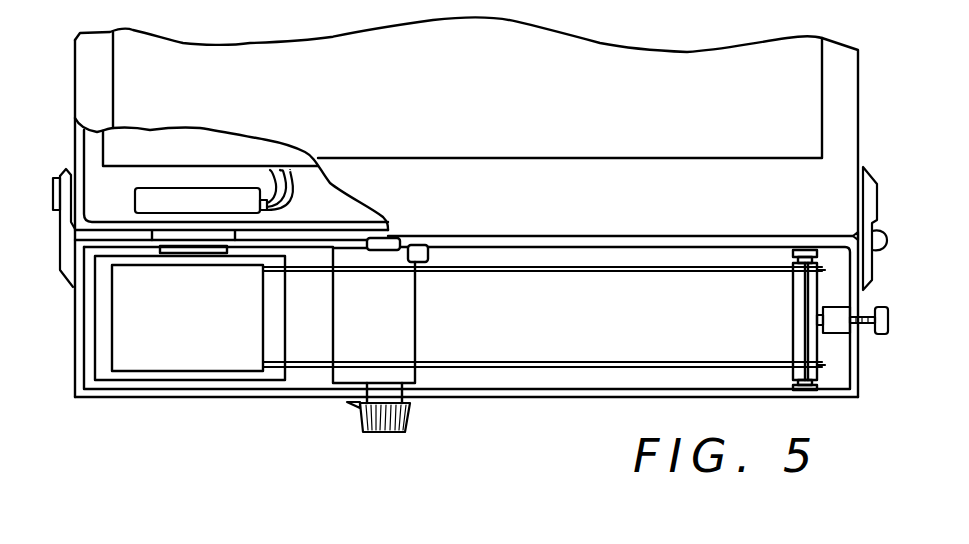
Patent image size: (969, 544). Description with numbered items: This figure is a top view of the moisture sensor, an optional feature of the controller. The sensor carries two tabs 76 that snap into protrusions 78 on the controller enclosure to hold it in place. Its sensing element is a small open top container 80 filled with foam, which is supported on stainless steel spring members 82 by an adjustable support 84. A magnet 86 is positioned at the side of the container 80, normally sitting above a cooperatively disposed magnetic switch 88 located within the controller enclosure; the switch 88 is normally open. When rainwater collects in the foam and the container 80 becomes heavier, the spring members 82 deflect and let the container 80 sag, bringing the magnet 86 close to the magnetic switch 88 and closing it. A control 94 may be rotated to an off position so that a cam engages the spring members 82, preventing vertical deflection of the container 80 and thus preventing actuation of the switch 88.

The tabs 76 is at (62, 172).
The protrusions 78 is at (878, 185).
The open top container 80 is at (205, 345).
The spring members 82 is at (545, 268).
The adjustable support 84 is at (877, 352).
The magnet 86 is at (200, 248).
The magnetic switch 88 is at (203, 197).
The control 94 is at (360, 405).